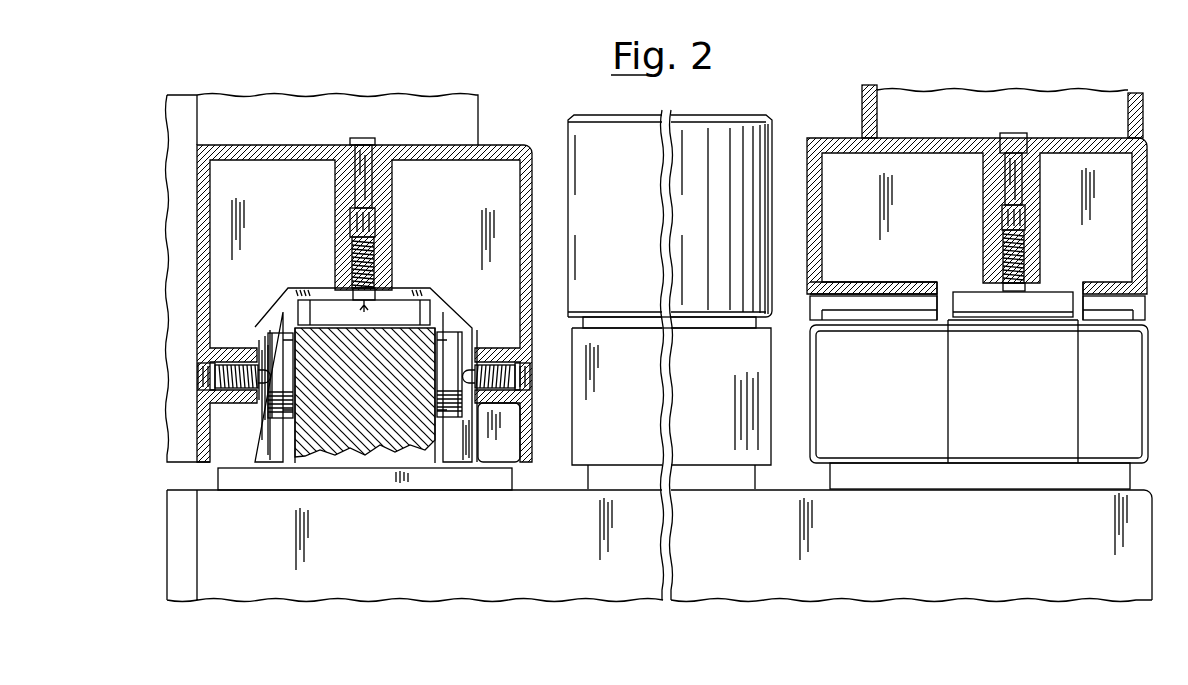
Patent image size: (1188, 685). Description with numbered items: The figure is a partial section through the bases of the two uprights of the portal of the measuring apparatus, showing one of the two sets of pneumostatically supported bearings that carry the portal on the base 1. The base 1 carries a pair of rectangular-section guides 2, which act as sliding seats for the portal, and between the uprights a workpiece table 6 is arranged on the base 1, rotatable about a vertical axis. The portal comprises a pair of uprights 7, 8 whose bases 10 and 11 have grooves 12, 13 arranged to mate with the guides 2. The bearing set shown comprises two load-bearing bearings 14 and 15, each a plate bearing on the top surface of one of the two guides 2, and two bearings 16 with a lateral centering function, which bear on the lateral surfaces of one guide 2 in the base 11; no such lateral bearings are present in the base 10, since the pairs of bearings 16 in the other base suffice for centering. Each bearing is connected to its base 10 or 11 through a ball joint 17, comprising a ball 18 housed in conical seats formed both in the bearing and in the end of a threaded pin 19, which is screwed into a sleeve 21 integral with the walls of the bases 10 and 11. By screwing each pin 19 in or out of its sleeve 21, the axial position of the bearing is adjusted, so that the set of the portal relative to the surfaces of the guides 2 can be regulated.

The base 1 is at (615, 580).
The guides 2 is at (368, 440).
The workpiece table 6 is at (745, 147).
The upright 7 is at (1052, 110).
The upright 8 is at (328, 110).
The base of upright 10 is at (1147, 215).
The base of upright 11 is at (197, 275).
The groove 12 is at (942, 292).
The groove 13 is at (290, 288).
The bearing 14 is at (1062, 292).
The bearing 15 is at (425, 300).
The bearings 16 is at (273, 345).
The ball joint 17 is at (398, 297).
The ball 18 is at (325, 288).
The threaded pin 19 is at (395, 290).
The sleeve 21 is at (385, 185).